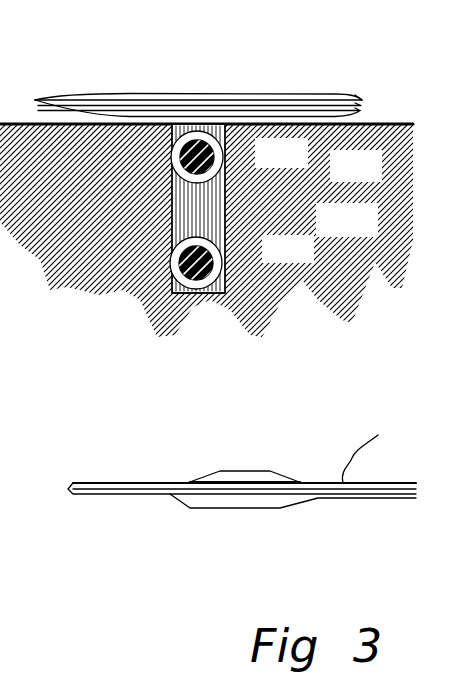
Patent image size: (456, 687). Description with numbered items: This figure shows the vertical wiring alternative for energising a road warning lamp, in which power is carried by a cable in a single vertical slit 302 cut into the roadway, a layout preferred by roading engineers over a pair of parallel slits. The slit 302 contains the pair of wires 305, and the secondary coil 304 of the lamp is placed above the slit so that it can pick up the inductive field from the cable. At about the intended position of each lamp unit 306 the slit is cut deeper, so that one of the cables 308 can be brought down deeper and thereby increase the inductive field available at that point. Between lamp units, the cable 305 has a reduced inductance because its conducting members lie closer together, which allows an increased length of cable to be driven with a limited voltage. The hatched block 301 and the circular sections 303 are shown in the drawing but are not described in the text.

The body / heat sink block 301 is at (348, 152).
The single slit 302 is at (317, 212).
The pipes 303 is at (258, 172).
The secondary coil 304 is at (47, 94).
The pair of wires 305 is at (216, 479).
The lamp unit 306 is at (282, 473).
The cable 308 is at (213, 508).